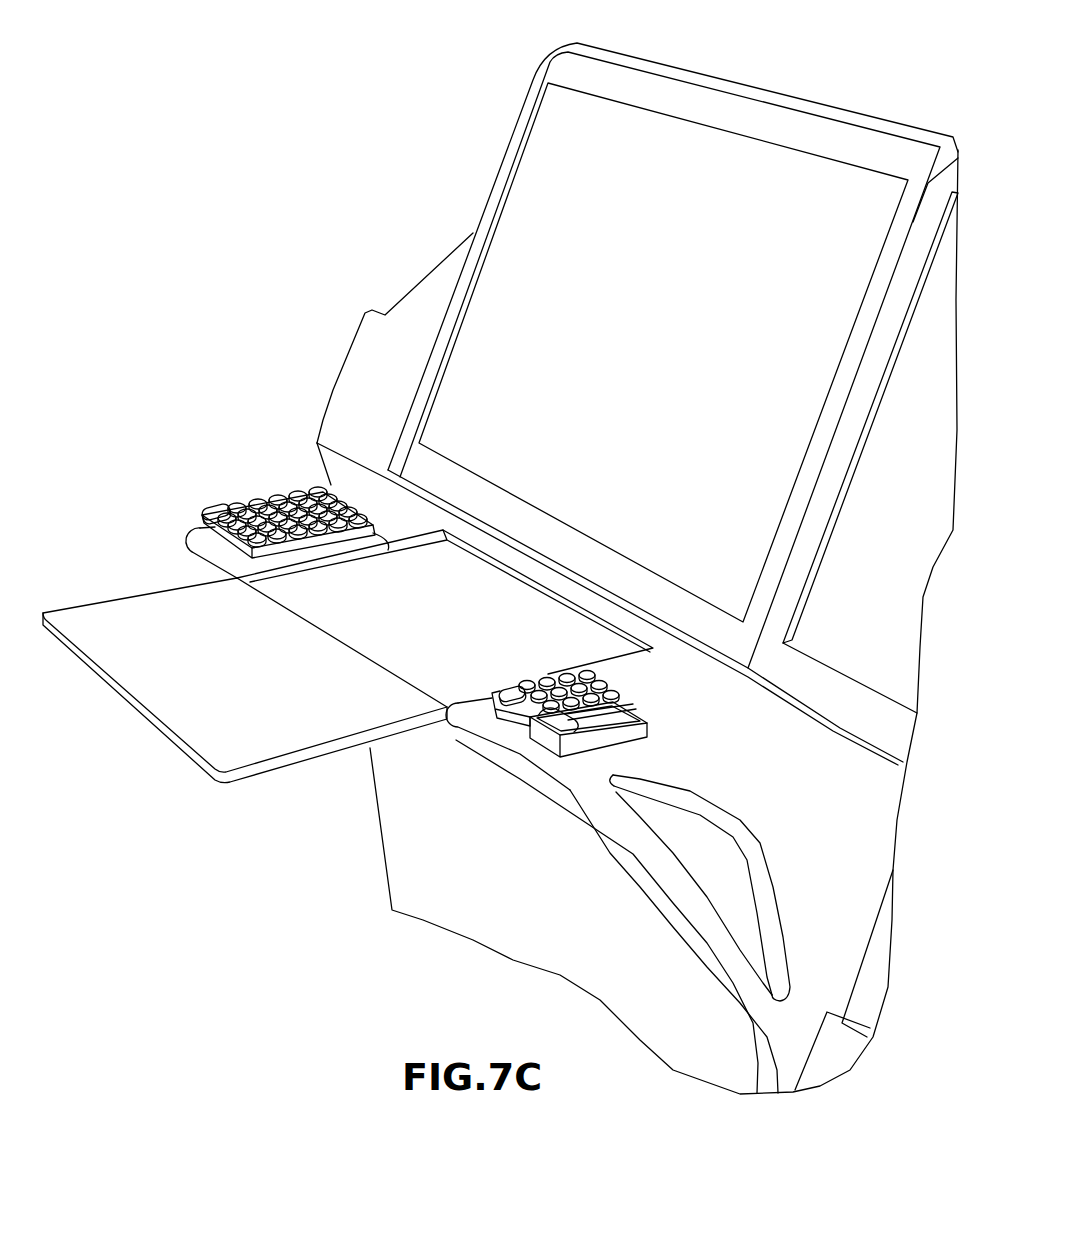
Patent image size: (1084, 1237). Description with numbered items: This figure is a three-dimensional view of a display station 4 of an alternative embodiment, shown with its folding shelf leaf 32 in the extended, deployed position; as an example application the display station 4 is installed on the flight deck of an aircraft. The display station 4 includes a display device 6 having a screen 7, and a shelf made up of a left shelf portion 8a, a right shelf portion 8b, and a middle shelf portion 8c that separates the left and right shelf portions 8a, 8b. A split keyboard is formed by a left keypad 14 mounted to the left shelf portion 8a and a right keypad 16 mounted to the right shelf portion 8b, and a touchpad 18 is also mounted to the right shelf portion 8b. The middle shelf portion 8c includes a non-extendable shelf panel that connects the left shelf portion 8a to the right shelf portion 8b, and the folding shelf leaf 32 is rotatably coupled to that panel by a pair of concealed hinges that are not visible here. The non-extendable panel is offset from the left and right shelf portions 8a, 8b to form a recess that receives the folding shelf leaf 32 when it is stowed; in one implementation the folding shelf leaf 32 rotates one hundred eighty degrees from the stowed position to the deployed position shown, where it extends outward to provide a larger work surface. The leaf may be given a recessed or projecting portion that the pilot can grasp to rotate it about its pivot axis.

The display station 4 is at (388, 276).
The display device 6 is at (513, 131).
The screen 7 is at (523, 197).
The left shelf portion 8a is at (202, 547).
The right shelf portion 8b is at (522, 762).
The middle shelf portion 8c is at (598, 648).
The left keypad 14 is at (207, 528).
The right keypad 16 is at (508, 713).
The touchpad 18 is at (593, 757).
The folding shelf leaf 32 is at (210, 725).